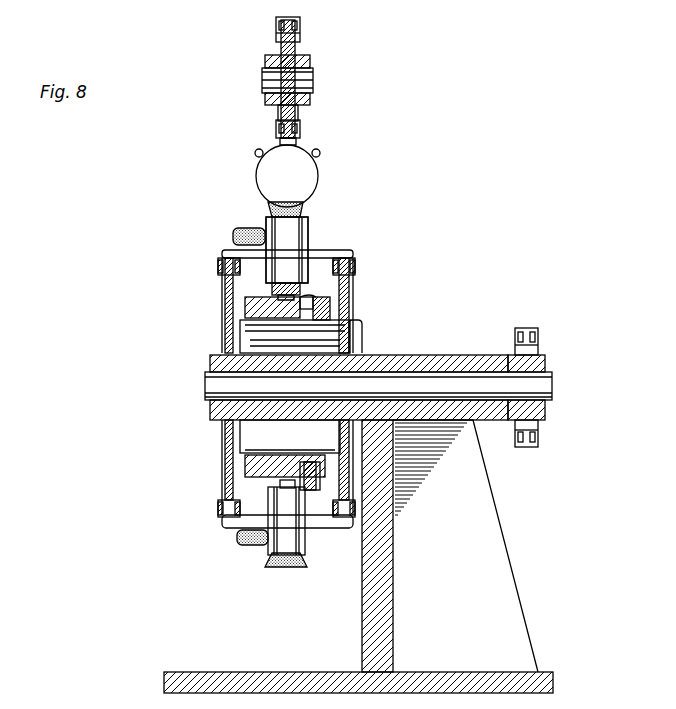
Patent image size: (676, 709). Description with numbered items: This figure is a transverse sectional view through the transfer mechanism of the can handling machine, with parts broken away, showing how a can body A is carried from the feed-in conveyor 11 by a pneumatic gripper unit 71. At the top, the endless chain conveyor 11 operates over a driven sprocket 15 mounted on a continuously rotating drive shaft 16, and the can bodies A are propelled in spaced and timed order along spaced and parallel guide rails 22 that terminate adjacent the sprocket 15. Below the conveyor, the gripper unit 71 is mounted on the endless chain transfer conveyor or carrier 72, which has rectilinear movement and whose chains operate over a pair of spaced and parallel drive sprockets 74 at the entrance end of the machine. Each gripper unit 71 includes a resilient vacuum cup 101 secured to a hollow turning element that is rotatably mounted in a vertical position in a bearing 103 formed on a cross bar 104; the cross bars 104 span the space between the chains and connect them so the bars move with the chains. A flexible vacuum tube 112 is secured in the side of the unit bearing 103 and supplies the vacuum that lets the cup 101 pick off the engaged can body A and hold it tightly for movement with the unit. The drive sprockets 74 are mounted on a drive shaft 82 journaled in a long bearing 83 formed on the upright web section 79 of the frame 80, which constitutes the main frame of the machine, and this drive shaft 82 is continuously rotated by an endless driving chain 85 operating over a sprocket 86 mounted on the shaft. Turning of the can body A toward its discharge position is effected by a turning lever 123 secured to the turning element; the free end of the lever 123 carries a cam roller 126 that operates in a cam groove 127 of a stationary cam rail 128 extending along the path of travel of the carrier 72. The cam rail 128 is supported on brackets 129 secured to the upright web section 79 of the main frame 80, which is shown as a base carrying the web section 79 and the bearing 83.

The conveyor 11 is at (300, 28).
The driven sprocket 15 is at (292, 52).
The drive shaft 16 is at (298, 80).
The guide rails 22 is at (256, 150).
The can body A is at (316, 172).
The vacuum cup 101 is at (302, 207).
The pneumatic gripper unit 71 is at (316, 226).
The bearing 103 is at (296, 240).
The flexible vacuum tube 112 is at (243, 230).
The cross bar 104 is at (348, 256).
The endless chain transfer conveyor 72 is at (362, 265).
The drive sprockets 74 is at (226, 296).
The stationary cam rail 128 is at (258, 305).
The cam groove 127 is at (329, 305).
The brackets 129 is at (356, 338).
The long bearing 83 is at (434, 362).
The drive shaft 82 is at (468, 385).
The endless driving chain 85 is at (540, 337).
The sprocket 86 is at (546, 363).
The cam roller 126 is at (308, 466).
The turning lever 123 is at (280, 490).
The upright web section 79 is at (380, 612).
The frame 80 is at (192, 680).